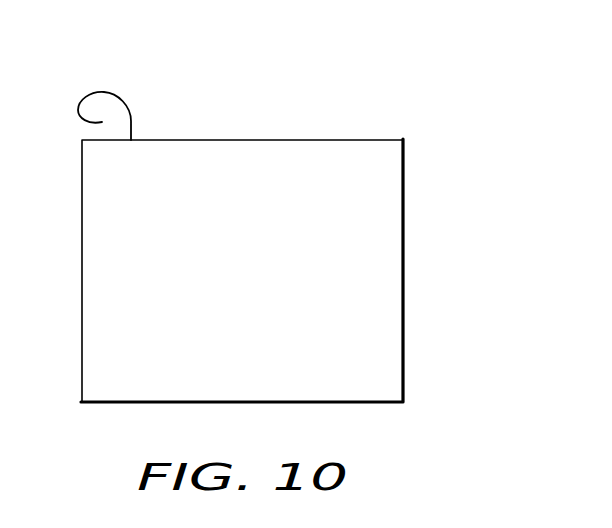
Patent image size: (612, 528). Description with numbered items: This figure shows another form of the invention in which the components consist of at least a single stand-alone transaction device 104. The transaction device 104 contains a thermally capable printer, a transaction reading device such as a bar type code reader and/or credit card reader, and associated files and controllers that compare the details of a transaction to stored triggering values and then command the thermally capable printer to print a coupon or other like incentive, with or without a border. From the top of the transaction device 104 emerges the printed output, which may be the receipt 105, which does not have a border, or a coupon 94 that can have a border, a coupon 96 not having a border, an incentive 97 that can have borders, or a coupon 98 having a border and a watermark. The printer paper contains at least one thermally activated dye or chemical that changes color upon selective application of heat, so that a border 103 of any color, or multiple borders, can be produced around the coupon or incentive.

The transaction device 104 is at (404, 205).
The receipt 105 is at (255, 98).
The border 103 is at (255, 98).
The coupon 98 is at (255, 98).
The incentive 97 is at (255, 98).
The coupon 96 is at (255, 98).
The coupon 94 is at (123, 95).